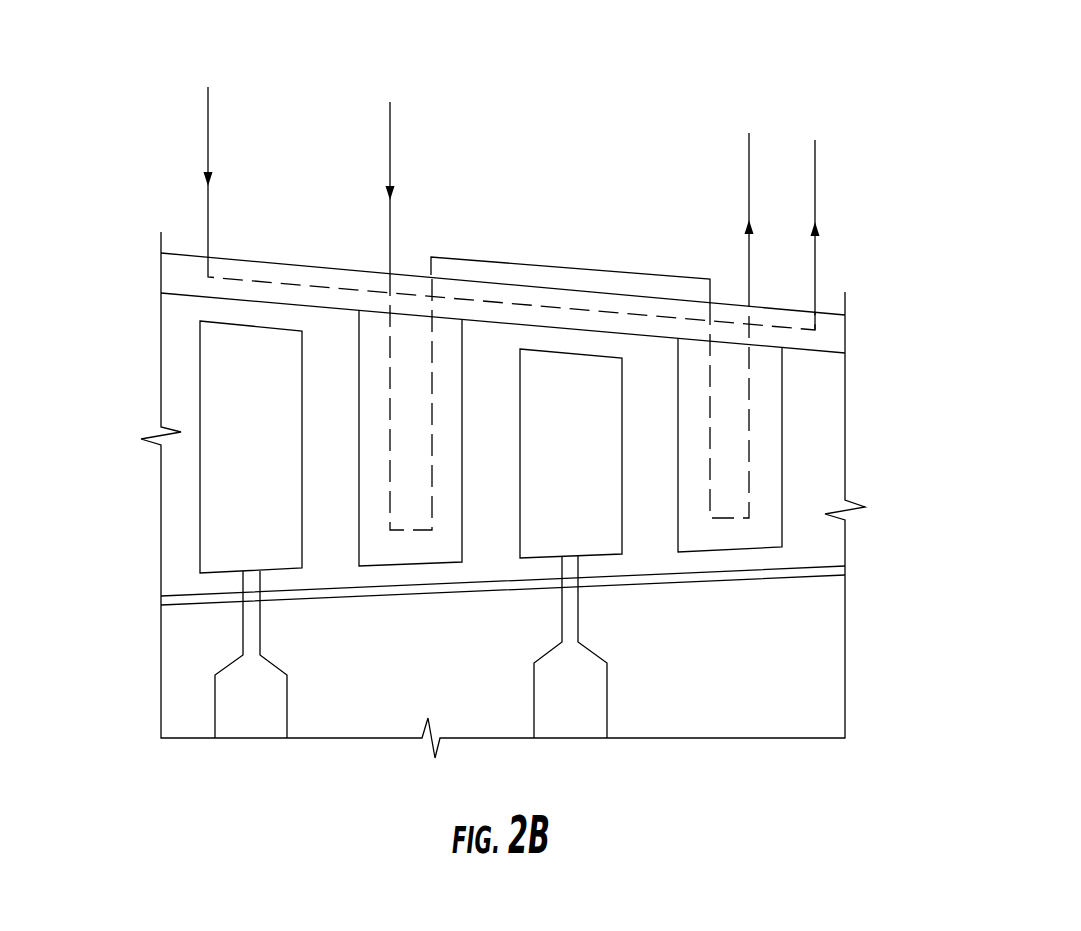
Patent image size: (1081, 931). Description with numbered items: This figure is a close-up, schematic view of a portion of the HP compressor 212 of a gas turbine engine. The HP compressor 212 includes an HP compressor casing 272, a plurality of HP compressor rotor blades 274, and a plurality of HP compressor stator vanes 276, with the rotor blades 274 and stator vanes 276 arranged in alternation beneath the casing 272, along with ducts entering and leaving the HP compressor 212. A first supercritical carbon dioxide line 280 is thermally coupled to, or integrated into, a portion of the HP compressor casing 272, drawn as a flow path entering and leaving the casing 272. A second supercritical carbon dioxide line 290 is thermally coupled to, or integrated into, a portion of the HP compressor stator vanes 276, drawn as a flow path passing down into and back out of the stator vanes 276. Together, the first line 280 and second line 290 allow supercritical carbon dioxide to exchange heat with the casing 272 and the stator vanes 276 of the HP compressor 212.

The HP compressor 212 is at (962, 132).
The HP compressor casing 272 is at (160, 263).
The HP compressor rotor blades 274 is at (222, 512).
The HP compressor stator vanes 276 is at (358, 435).
The first supercritical carbon dioxide line 280 is at (207, 128).
The second supercritical carbon dioxide line 290 is at (392, 145).